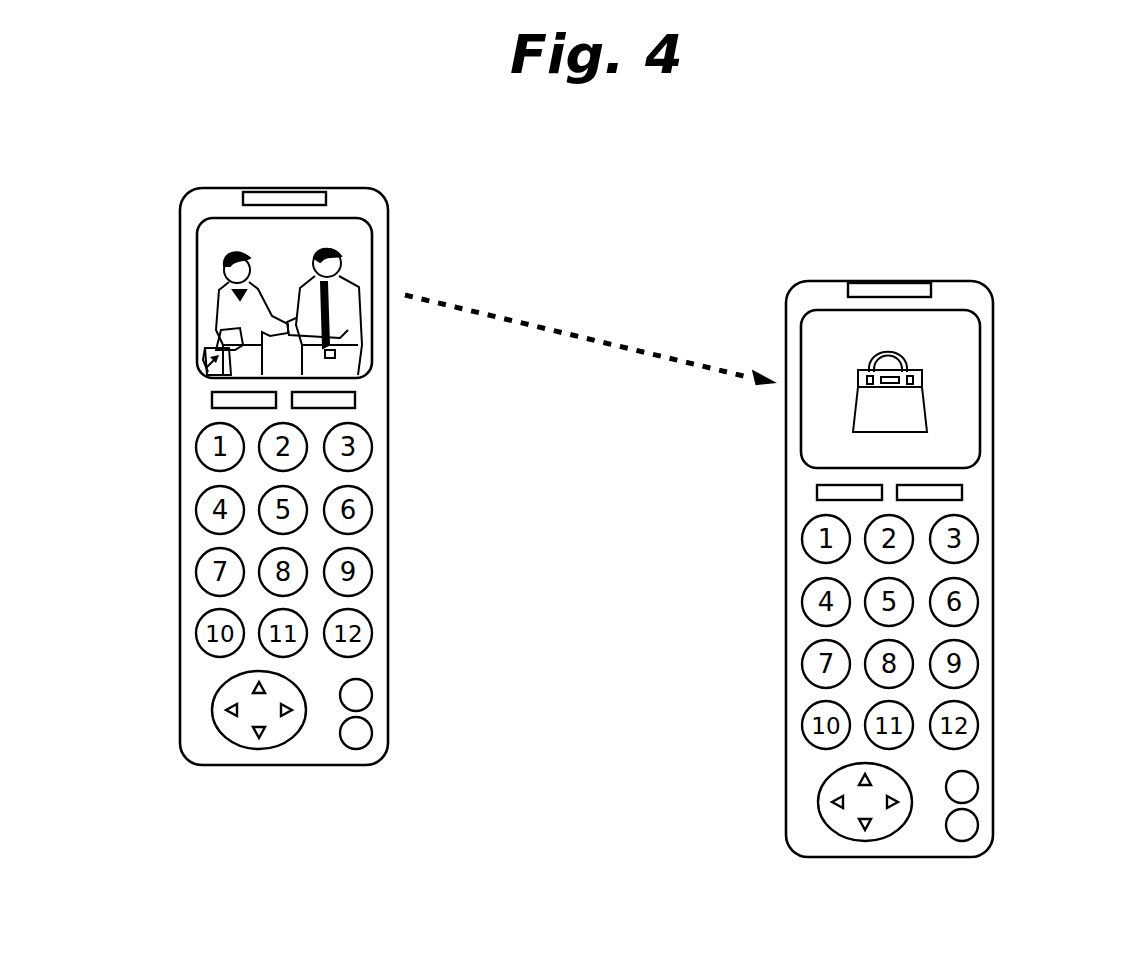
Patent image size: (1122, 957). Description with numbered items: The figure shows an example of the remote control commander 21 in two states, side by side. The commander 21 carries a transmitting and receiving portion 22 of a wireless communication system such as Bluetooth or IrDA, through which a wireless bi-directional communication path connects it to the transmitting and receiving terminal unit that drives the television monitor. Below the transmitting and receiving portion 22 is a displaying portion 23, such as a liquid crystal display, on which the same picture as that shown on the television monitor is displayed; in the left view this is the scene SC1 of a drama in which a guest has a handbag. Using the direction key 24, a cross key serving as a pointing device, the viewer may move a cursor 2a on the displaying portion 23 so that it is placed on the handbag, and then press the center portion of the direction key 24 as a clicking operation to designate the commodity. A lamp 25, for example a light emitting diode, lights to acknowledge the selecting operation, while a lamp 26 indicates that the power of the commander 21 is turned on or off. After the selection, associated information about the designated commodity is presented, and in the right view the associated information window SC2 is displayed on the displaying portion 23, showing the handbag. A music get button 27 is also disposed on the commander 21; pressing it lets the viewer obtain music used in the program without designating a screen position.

The remote control commander 21 is at (389, 540).
The transmitting and receiving portion 22 is at (285, 190).
The displaying portion 23 is at (373, 258).
The direction key 24 is at (242, 730).
The lamp 25 is at (212, 403).
The lamp 26 is at (350, 402).
The music get button 27 is at (357, 695).
The cursor 2a is at (205, 360).
The scene SC1 is at (357, 235).
The associated information window SC2 is at (958, 403).